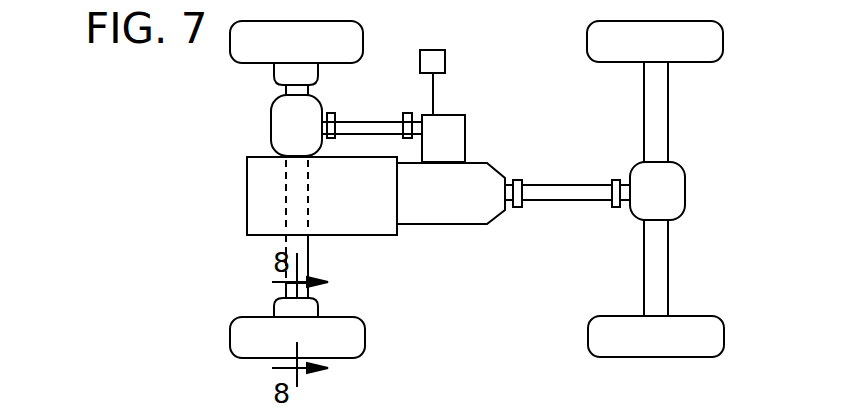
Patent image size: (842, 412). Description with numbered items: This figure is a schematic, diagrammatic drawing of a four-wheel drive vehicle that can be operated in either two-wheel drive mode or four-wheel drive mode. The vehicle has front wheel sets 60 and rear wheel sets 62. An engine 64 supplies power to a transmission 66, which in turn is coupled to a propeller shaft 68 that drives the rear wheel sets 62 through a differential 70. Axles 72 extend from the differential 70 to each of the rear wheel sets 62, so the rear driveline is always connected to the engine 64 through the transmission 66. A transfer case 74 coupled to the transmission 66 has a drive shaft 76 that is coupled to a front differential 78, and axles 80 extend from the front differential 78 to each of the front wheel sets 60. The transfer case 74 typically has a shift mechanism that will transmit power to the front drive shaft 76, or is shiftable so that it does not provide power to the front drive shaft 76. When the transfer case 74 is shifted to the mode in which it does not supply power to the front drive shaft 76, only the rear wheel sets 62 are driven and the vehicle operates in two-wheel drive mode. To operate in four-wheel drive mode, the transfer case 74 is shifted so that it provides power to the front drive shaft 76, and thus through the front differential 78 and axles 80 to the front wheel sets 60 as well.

The front wheel sets 60 is at (365, 35).
The rear wheel sets 62 is at (587, 40).
The engine 64 is at (373, 210).
The transmission 66 is at (457, 208).
The propeller shaft 68 is at (560, 190).
The differential 70 is at (675, 190).
The axles 72 is at (663, 115).
The transfer case 74 is at (465, 128).
The drive shaft 76 is at (371, 125).
The front differential 78 is at (280, 130).
The axles 80 is at (285, 90).